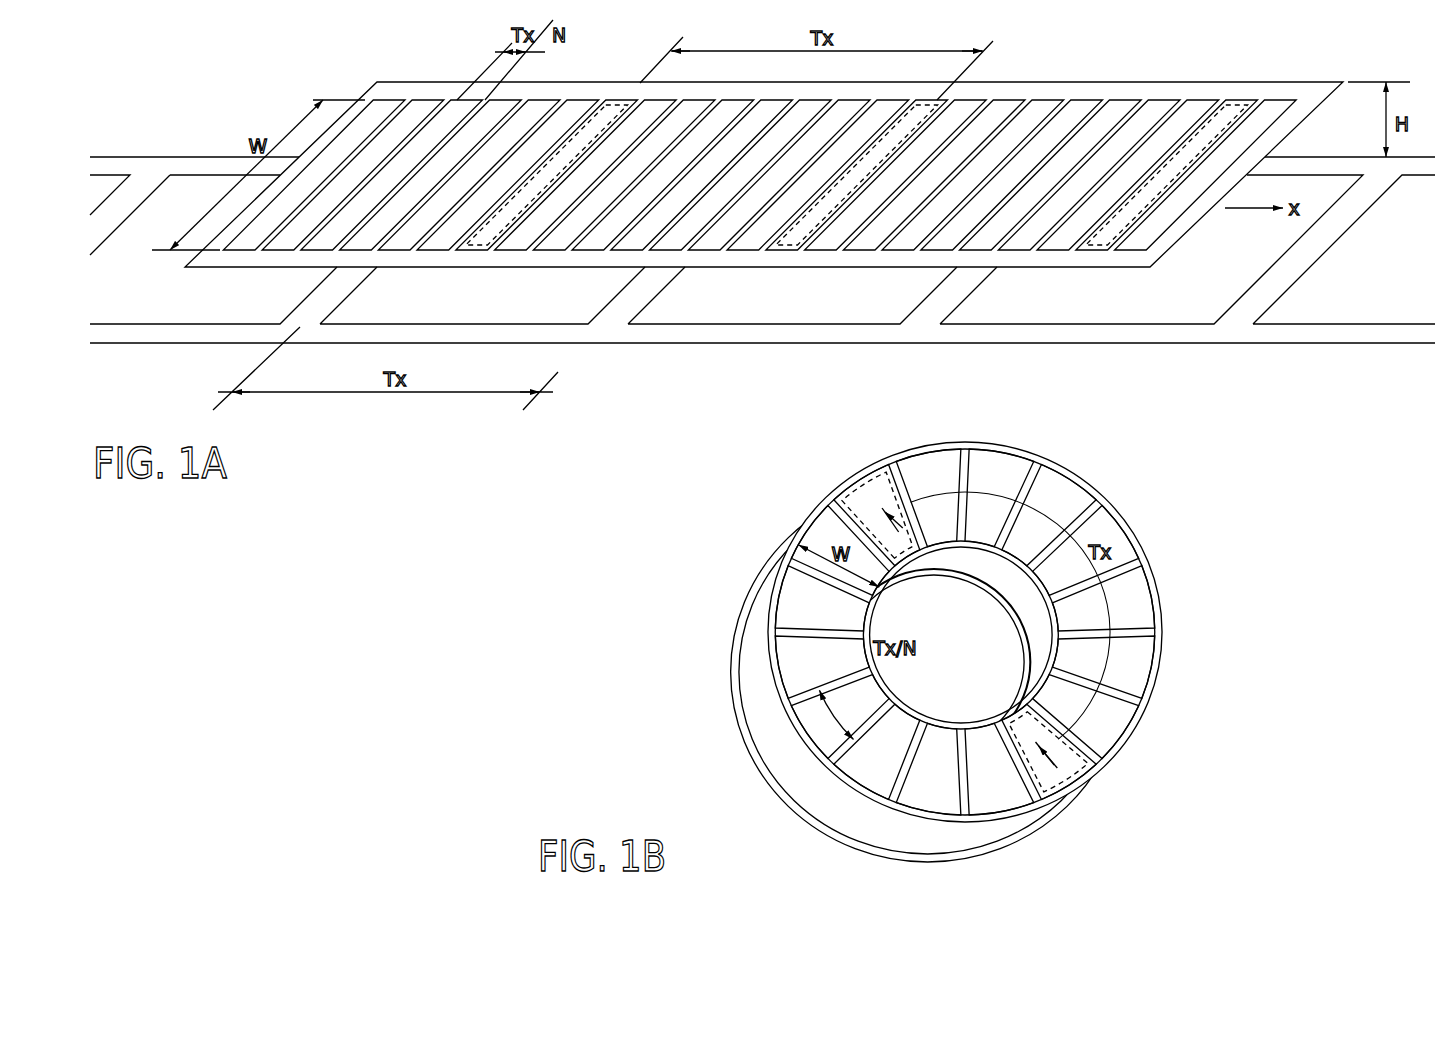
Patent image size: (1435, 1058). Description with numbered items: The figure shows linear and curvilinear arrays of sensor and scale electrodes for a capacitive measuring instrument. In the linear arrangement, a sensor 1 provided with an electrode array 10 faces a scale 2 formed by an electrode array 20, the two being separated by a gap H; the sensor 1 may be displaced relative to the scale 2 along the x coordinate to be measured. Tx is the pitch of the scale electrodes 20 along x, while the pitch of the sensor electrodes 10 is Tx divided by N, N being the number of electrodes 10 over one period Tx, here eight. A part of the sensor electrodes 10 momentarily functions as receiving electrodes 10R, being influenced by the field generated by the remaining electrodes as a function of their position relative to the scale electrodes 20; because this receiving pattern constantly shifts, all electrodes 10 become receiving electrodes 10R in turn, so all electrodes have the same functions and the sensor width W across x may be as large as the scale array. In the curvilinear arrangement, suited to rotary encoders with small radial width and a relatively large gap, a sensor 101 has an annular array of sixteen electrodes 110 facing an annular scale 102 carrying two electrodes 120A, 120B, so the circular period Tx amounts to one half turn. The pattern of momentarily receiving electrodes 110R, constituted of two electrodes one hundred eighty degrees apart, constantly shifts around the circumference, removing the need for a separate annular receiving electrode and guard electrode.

In FIG. 1A, the sensor 1 is at (438, 98).
In FIG. 1A, the scale 2 is at (138, 187).
In FIG. 1A, the sensor electrodes 10 is at (1110, 118).
In FIG. 1A, the receiving electrodes 10R is at (610, 117).
In FIG. 1A, the scale electrodes 20 is at (192, 193).
In FIG. 1B, the sensor 101 is at (1075, 515).
In FIG. 1B, the annular scale 102 is at (770, 777).
In FIG. 1B, the sensor electrodes 110 is at (1120, 727).
In FIG. 1B, the receiving electrodes 110R is at (867, 503).
In FIG. 1B, the scale electrode 120A is at (975, 562).
In FIG. 1B, the scale electrode 120B is at (1050, 650).